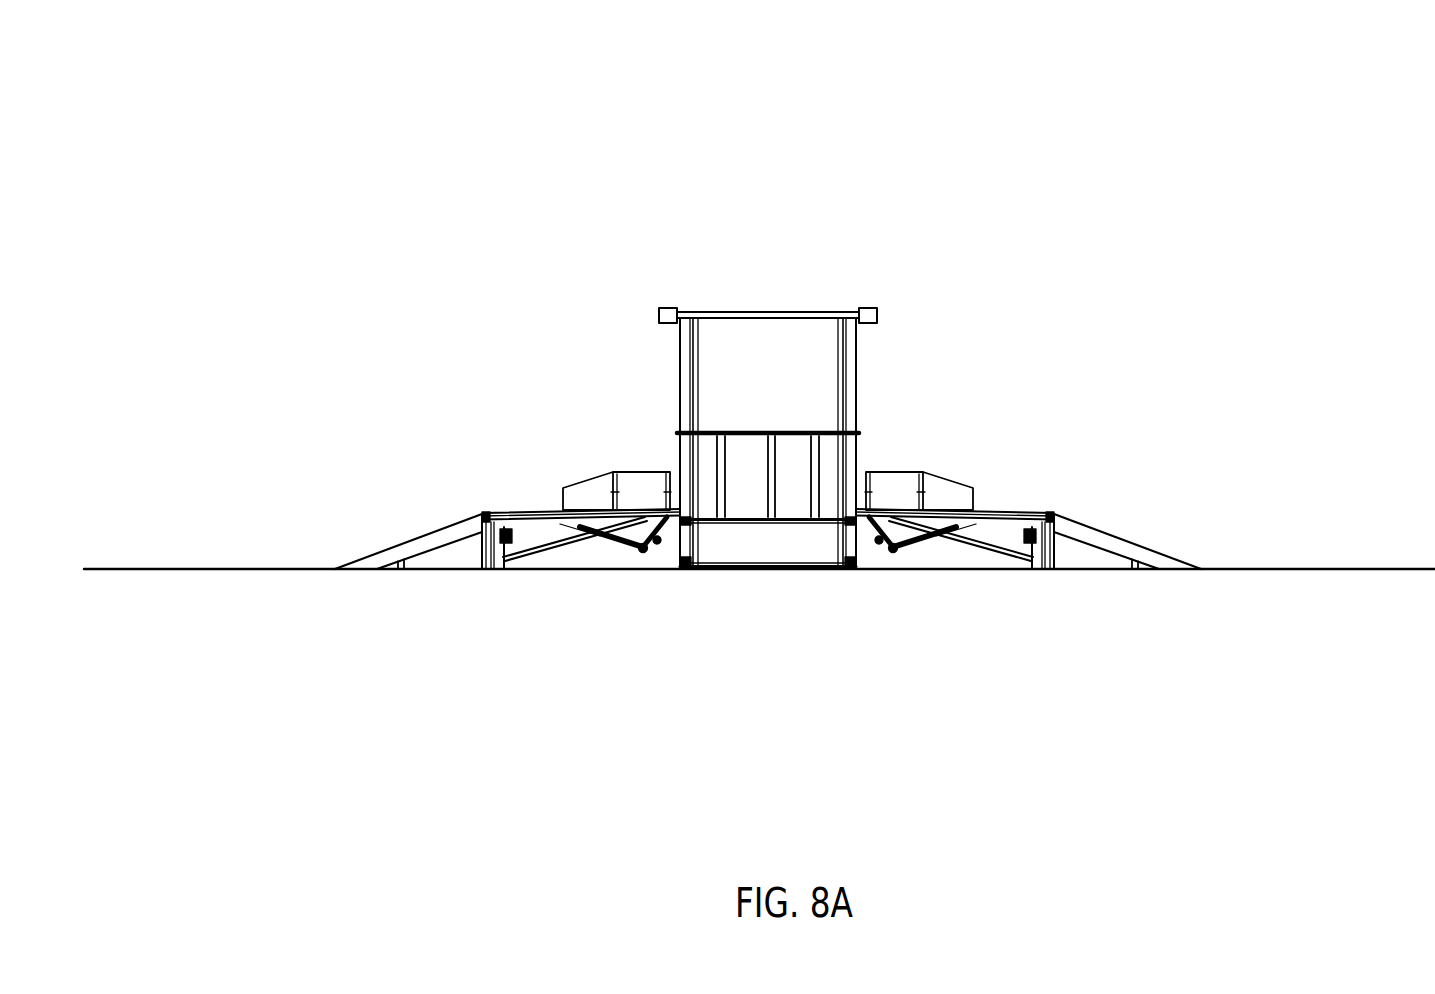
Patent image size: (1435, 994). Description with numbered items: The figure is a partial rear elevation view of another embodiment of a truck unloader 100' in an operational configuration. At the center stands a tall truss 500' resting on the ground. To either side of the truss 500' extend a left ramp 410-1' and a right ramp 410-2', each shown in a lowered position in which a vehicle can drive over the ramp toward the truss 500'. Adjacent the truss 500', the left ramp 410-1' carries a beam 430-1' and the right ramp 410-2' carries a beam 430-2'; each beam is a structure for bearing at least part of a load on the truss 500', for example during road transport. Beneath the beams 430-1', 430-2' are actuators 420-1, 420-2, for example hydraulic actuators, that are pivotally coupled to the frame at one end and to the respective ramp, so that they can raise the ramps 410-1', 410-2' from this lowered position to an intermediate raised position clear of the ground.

The truck unloader 100' is at (759, 337).
The truss 500' is at (842, 386).
The beam 430-1' is at (566, 439).
The beam 430-2' is at (988, 442).
The actuator 420-1 is at (612, 548).
The actuator 420-2 is at (924, 548).
The left ramp 410-1' is at (384, 496).
The right ramp 410-2' is at (1186, 463).